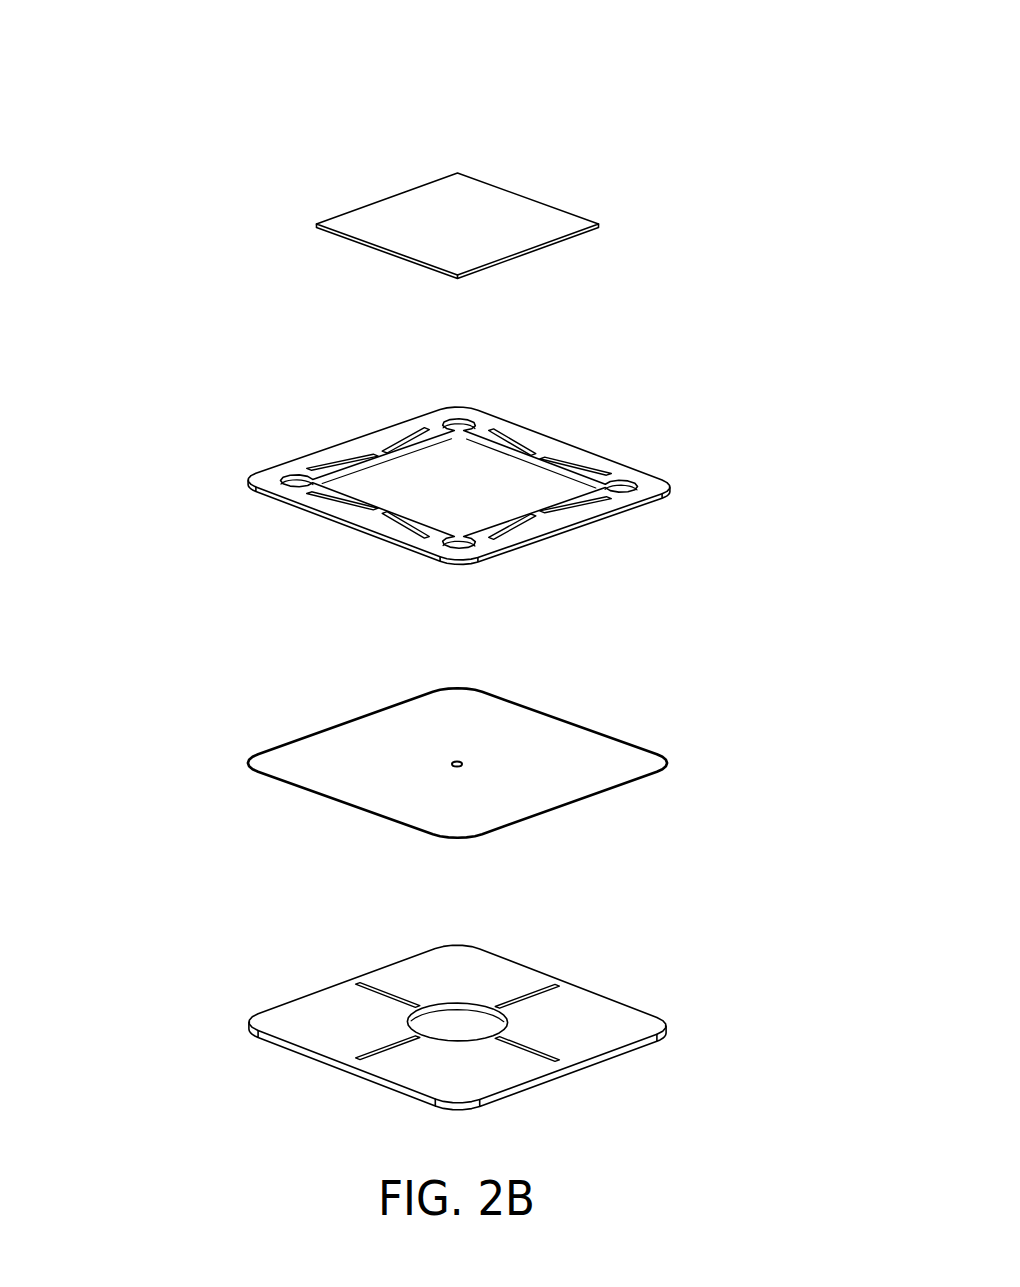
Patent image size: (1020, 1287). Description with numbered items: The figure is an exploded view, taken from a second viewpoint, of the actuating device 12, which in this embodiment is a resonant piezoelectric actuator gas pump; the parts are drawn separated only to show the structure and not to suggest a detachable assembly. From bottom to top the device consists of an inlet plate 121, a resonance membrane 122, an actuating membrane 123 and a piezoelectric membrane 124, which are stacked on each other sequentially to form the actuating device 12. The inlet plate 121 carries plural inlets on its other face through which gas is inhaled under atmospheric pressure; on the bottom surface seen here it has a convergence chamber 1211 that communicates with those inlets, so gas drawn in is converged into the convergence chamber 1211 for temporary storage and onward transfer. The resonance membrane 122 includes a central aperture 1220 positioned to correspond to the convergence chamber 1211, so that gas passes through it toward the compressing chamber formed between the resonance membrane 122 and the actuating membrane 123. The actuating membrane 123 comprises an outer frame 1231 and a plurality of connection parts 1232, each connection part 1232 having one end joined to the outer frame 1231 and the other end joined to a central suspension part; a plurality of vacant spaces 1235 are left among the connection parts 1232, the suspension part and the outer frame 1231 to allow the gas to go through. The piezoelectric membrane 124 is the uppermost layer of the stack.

The actuating device 12 is at (703, 49).
The inlet plate 121 is at (287, 1022).
The convergence chamber 1211 is at (452, 1021).
The resonance membrane 122 is at (294, 768).
The central aperture 1220 is at (467, 760).
The actuating membrane 123 is at (227, 445).
The outer frame 1231 is at (647, 483).
The connection parts 1232 is at (538, 447).
The vacant spaces 1235 is at (613, 487).
The piezoelectric membrane 124 is at (397, 218).